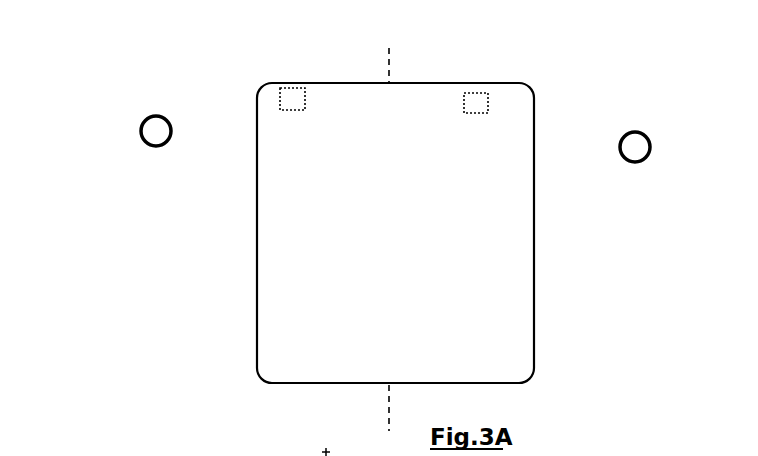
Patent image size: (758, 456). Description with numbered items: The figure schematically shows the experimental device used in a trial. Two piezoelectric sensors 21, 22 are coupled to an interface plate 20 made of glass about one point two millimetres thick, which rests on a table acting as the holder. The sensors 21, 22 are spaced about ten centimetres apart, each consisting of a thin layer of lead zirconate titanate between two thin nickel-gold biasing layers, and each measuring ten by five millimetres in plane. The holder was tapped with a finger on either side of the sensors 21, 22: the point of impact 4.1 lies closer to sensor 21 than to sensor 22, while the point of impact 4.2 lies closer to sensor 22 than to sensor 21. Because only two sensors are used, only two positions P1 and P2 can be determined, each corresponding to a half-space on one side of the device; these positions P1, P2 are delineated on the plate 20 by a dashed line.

The interface plate 20 is at (280, 238).
The piezoelectric sensor 21 is at (492, 100).
The piezoelectric sensor 22 is at (293, 100).
The position P1 is at (564, 74).
The position P2 is at (202, 75).
The point of impact 4.1 is at (641, 137).
The point of impact 4.2 is at (150, 131).